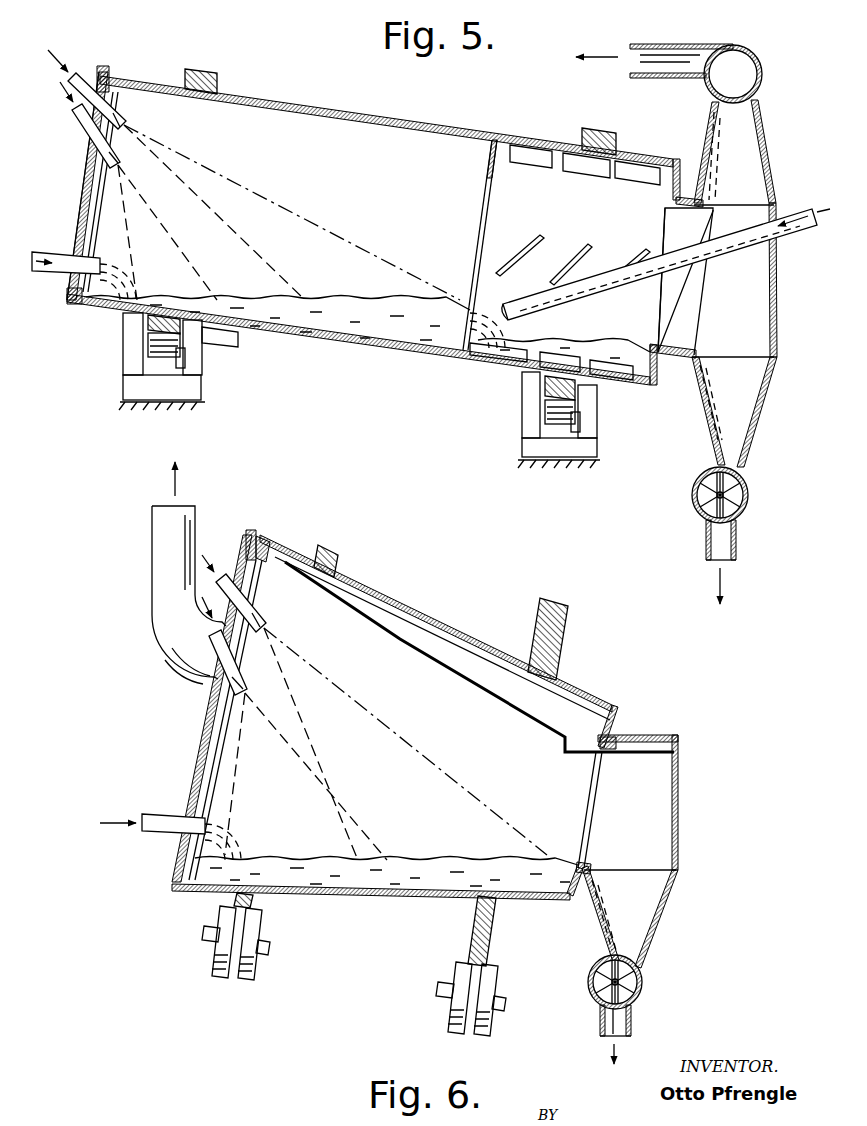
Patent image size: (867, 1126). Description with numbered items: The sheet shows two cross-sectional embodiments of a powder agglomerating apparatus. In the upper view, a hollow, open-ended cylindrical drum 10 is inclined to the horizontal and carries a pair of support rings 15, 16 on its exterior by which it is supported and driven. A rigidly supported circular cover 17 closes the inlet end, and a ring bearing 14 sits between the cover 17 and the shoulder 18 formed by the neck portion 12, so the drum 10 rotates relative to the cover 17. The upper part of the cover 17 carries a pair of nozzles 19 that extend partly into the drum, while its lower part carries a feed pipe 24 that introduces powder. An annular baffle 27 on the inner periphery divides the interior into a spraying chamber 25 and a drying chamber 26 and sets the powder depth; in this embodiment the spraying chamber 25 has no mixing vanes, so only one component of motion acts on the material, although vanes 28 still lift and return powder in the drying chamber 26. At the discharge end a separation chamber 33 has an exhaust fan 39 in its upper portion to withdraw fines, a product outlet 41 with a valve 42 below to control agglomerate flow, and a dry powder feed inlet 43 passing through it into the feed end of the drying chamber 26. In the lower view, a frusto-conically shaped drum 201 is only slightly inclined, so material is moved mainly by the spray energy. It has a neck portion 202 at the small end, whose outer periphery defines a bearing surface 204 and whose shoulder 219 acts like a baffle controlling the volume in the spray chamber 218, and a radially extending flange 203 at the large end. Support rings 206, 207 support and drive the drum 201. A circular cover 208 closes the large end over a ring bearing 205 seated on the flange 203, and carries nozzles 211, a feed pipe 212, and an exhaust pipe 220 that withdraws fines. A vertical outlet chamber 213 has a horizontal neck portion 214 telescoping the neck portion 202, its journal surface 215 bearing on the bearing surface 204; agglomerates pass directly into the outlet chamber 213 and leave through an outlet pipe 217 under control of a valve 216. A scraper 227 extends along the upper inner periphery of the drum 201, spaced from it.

In FIG. 5, the cylindrical drum 10 is at (436, 106).
In FIG. 5, the neck portion 12 is at (121, 91).
In FIG. 5, the ring bearing 14 is at (106, 68).
In FIG. 5, the support ring 15 is at (201, 66).
In FIG. 5, the support ring 16 is at (597, 125).
In FIG. 5, the circular cover 17 is at (80, 204).
In FIG. 5, the shoulder 18 is at (80, 306).
In FIG. 5, the nozzles 19 is at (66, 110).
In FIG. 5, the feed pipe 24 is at (52, 270).
In FIG. 5, the spraying chamber 25 is at (370, 194).
In FIG. 5, the drying chamber 26 is at (610, 222).
In FIG. 5, the annular baffle 27 is at (462, 350).
In FIG. 5, the vanes 28 is at (531, 178).
In FIG. 5, the separation chamber 33 is at (781, 298).
In FIG. 5, the exhaust fan 39 is at (763, 63).
In FIG. 5, the product outlet 41 is at (738, 542).
In FIG. 5, the valve 42 is at (750, 496).
In FIG. 5, the dry powder feed inlet 43 is at (792, 210).
In FIG. 6, the frusto-conically shaped drum 201 is at (428, 604).
In FIG. 6, the neck portion 202 is at (592, 748).
In FIG. 6, the radially extending flange 203 is at (270, 551).
In FIG. 6, the bearing surface 204 is at (611, 738).
In FIG. 6, the ring bearing 205 is at (253, 530).
In FIG. 6, the support ring 206 is at (333, 543).
In FIG. 6, the support ring 207 is at (563, 597).
In FIG. 6, the circular cover 208 is at (201, 736).
In FIG. 6, the nozzles 211 is at (252, 686).
In FIG. 6, the feed pipe 212 is at (161, 814).
In FIG. 6, the outlet chamber 213 is at (686, 807).
In FIG. 6, the neck portion 214 is at (579, 877).
In FIG. 6, the journal surface 215 is at (592, 865).
In FIG. 6, the valve 216 is at (644, 983).
In FIG. 6, the outlet pipe 217 is at (634, 1022).
In FIG. 6, the spray chamber 218 is at (443, 720).
In FIG. 6, the shoulder 219 is at (576, 866).
In FIG. 6, the exhaust pipe 220 is at (151, 590).
In FIG. 6, the scraper 227 is at (566, 716).